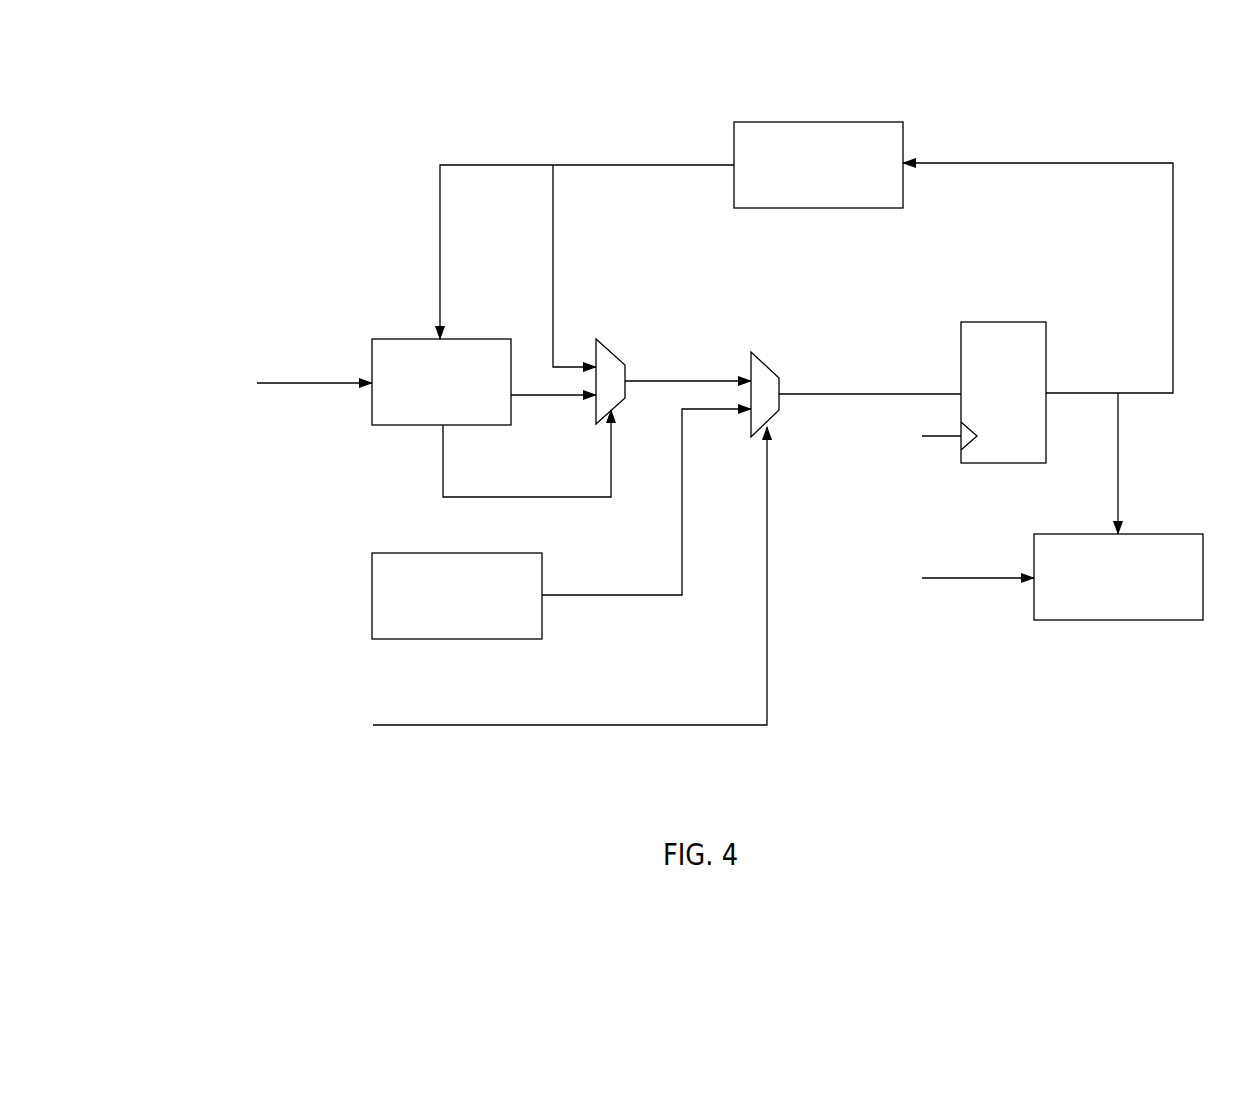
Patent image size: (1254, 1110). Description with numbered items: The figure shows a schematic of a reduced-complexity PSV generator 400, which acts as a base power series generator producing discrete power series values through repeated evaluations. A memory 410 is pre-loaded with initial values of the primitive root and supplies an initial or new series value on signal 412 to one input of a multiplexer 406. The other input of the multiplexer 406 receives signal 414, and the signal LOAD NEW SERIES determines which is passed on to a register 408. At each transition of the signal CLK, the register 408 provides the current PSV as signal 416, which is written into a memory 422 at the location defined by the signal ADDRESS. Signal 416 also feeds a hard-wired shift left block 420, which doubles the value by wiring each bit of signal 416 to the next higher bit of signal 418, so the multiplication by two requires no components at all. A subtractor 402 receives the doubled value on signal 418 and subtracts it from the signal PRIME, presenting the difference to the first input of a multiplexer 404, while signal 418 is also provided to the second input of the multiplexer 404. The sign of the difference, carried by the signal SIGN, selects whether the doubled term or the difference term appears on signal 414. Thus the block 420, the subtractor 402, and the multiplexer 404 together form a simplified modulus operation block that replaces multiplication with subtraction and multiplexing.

The PSV generator 400 is at (255, 182).
The subtractor 402 is at (468, 338).
The multiplexer 404 is at (610, 348).
The multiplexer 406 is at (767, 363).
The register 408 is at (1017, 322).
The memory 410 is at (498, 553).
The signal 412 is at (583, 595).
The signal 414 is at (665, 380).
The signal 416 is at (1016, 162).
The signal 418 is at (593, 163).
The hard-wired shift left block 420 is at (862, 208).
The memory 422 is at (1160, 534).